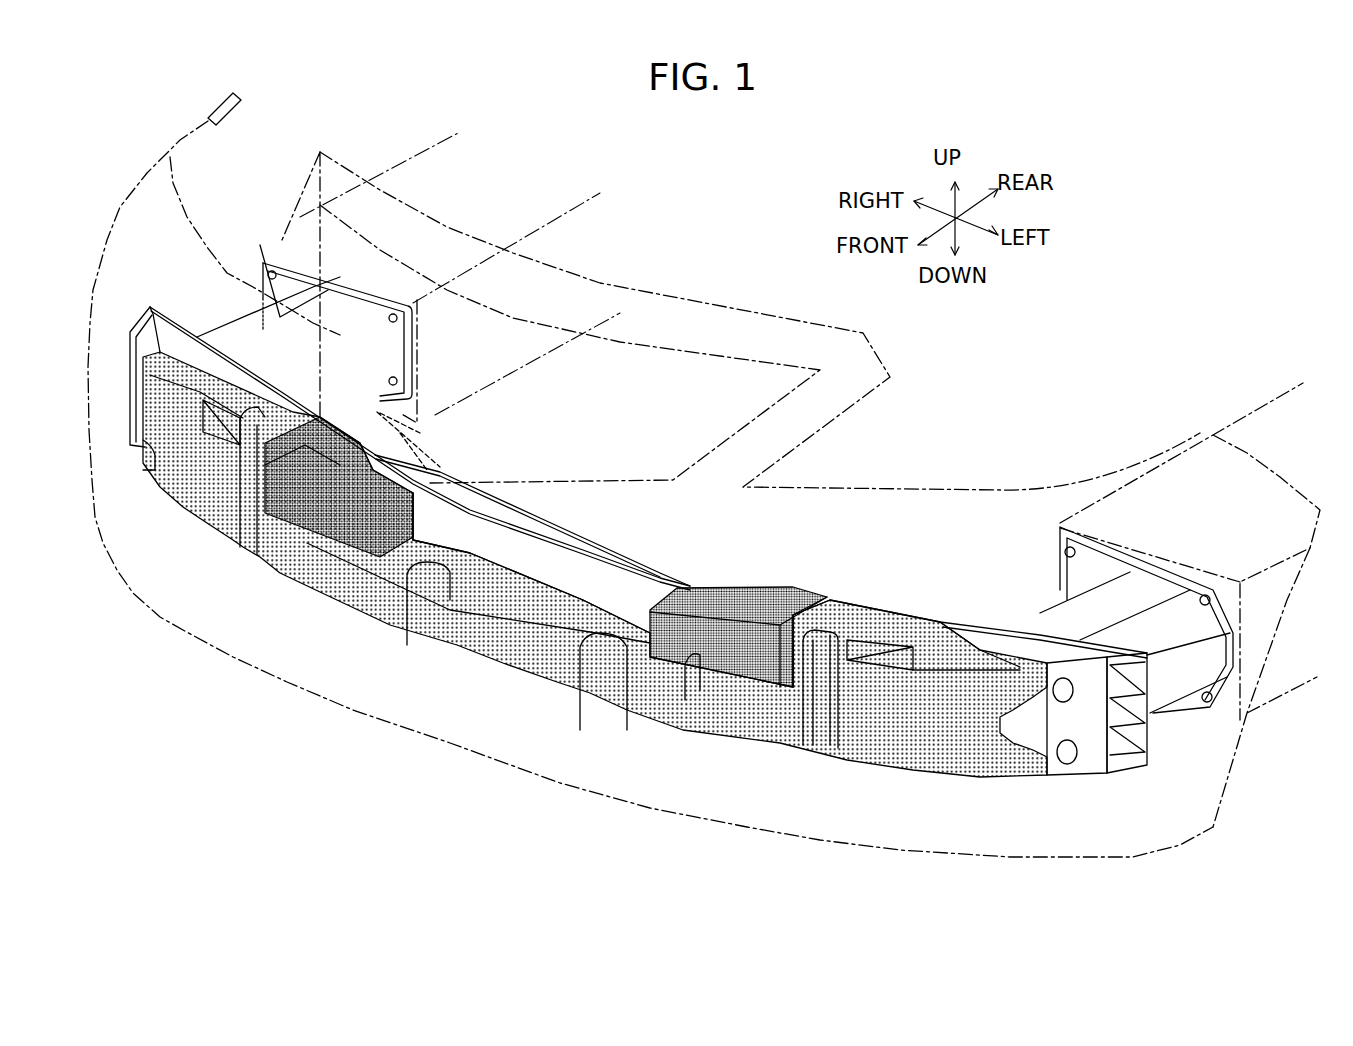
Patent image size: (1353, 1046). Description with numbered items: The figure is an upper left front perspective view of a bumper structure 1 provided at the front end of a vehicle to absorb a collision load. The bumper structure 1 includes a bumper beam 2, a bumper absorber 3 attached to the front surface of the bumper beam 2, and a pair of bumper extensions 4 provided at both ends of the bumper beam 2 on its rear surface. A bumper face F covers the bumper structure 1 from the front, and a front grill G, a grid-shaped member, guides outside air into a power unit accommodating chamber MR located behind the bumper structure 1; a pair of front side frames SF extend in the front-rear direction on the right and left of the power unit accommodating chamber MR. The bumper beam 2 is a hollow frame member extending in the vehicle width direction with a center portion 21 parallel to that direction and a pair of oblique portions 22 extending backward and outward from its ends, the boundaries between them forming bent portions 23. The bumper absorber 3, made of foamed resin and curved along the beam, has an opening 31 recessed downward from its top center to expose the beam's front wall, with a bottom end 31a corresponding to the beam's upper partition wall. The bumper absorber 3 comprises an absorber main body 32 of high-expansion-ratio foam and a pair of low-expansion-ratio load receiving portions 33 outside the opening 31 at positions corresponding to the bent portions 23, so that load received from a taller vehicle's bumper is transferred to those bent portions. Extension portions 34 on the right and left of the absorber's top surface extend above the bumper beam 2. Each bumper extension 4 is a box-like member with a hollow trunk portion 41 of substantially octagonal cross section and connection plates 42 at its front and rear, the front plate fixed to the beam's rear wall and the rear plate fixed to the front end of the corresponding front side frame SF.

The bumper structure 1 is at (298, 730).
The bumper beam 2 is at (570, 512).
The center portion 21 is at (640, 552).
The oblique portion 22 is at (140, 355).
The bent portion 23 is at (467, 480).
The bumper absorber 3 is at (500, 667).
The opening 31 is at (407, 642).
The bottom end of the opening 31a is at (583, 640).
The absorber main body 32 is at (900, 727).
The load receiving portion 33 is at (240, 547).
The extension portion 34 is at (397, 433).
The bumper extension 4 is at (237, 343).
The trunk portion 41 is at (278, 317).
The connection plate 42 is at (310, 273).
The bumper face F is at (300, 690).
The front grill G is at (677, 347).
The front side frame SF is at (385, 165).
The power unit accommodating chamber MR is at (1040, 400).